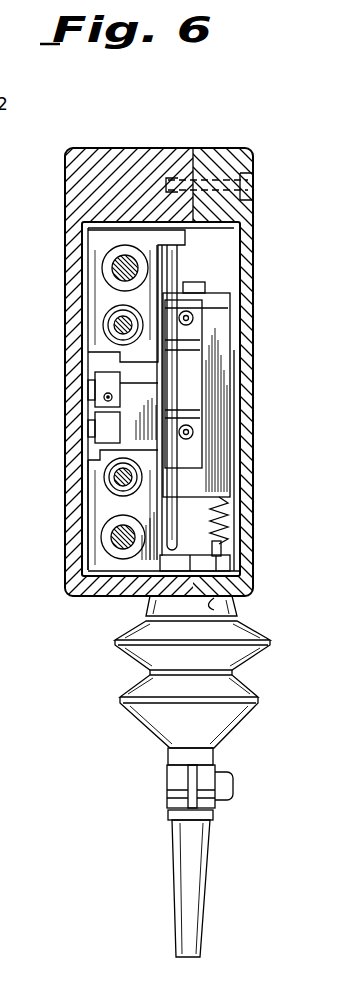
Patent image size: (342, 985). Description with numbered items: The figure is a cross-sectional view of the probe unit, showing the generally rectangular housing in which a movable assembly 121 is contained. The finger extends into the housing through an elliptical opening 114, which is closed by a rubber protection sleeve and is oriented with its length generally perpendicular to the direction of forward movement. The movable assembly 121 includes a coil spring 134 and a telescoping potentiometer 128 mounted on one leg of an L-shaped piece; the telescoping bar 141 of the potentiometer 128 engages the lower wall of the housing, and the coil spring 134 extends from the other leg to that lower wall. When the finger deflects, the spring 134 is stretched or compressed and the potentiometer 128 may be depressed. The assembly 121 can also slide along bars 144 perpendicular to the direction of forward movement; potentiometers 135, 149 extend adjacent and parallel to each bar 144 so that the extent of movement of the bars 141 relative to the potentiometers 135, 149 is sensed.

The bars 144 is at (120, 268).
The potentiometer 135 is at (107, 389).
The telescoping bar 141 is at (104, 398).
The potentiometer 149 is at (100, 443).
The telescoping potentiometer 128 is at (196, 410).
The movable assembly 121 is at (213, 475).
The coil spring 134 is at (225, 528).
The elliptical opening 114 is at (236, 609).